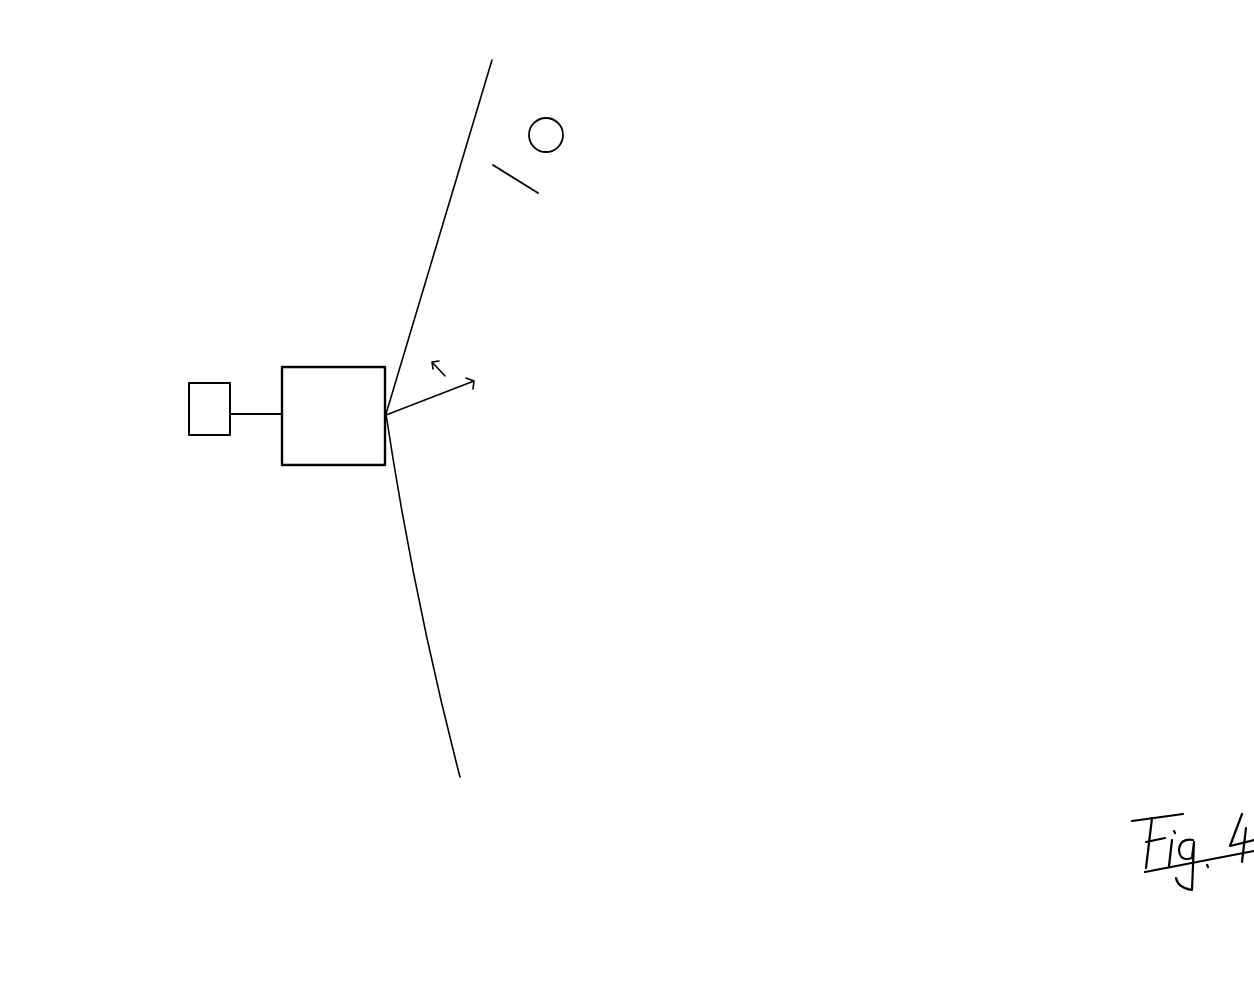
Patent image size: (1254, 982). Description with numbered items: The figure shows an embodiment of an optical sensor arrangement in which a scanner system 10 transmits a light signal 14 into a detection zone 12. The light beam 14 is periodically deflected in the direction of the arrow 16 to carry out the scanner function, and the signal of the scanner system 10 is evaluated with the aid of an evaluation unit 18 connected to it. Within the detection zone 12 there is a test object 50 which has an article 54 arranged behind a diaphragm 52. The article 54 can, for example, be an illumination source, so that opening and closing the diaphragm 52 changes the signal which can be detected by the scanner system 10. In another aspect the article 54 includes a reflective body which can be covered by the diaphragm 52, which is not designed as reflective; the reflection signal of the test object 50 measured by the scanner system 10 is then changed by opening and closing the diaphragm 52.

The scanner system 10 is at (348, 387).
The detection zone 12 is at (520, 645).
The light signal 14 is at (418, 405).
The arrow 16 is at (465, 425).
The evaluation unit 18 is at (213, 422).
The test object 50 is at (617, 160).
The diaphragm 52 is at (533, 195).
The article 54 is at (558, 116).